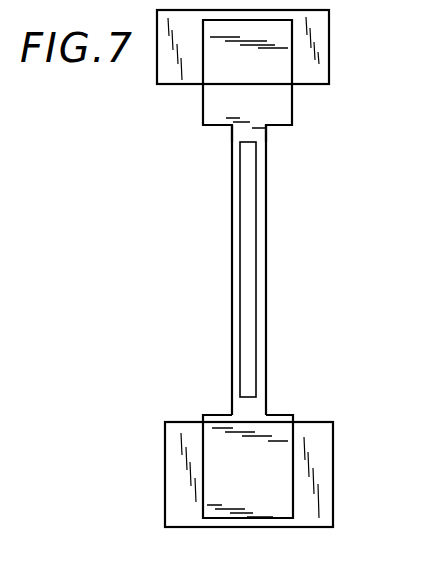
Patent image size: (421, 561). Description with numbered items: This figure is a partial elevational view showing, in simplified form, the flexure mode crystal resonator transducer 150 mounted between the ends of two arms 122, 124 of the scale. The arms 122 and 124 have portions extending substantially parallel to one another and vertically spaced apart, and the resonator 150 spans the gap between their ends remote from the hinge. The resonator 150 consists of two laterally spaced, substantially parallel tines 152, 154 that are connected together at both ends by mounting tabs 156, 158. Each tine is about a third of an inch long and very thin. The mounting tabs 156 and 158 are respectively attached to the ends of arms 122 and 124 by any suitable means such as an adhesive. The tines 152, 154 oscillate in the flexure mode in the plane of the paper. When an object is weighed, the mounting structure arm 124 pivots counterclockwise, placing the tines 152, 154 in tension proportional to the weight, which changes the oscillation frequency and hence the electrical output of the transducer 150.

The arm 122 is at (173, 437).
The arm 124 is at (331, 84).
The flexure mode crystal resonator transducer 150 is at (292, 223).
The tine 152 is at (238, 250).
The tine 154 is at (268, 265).
The mounting tab 156 is at (222, 420).
The mounting tab 158 is at (203, 124).